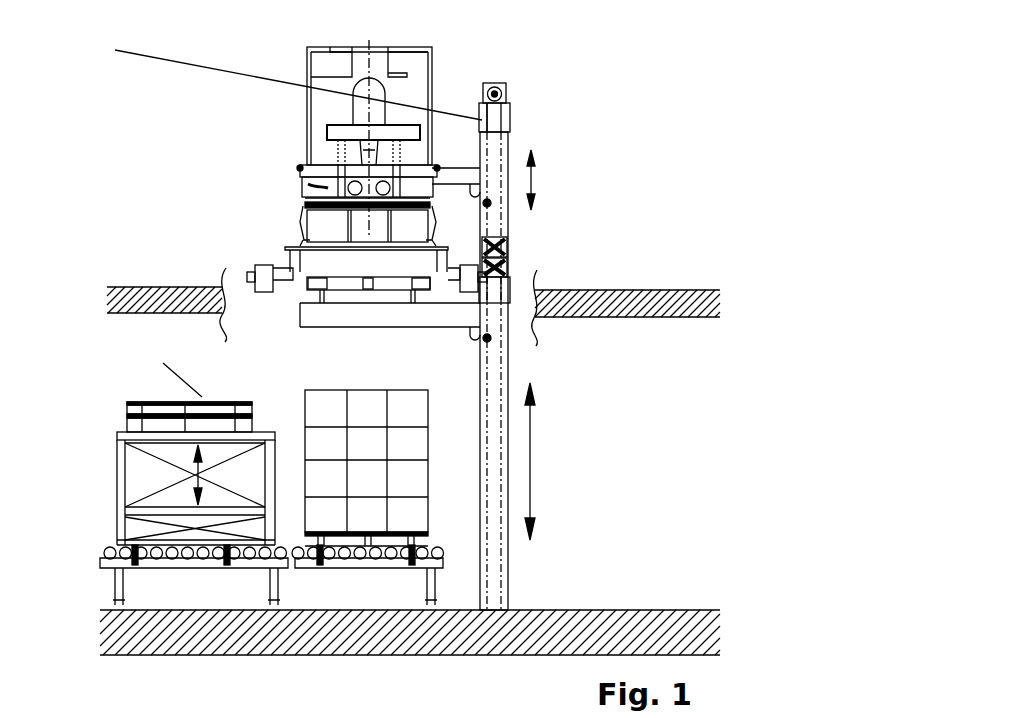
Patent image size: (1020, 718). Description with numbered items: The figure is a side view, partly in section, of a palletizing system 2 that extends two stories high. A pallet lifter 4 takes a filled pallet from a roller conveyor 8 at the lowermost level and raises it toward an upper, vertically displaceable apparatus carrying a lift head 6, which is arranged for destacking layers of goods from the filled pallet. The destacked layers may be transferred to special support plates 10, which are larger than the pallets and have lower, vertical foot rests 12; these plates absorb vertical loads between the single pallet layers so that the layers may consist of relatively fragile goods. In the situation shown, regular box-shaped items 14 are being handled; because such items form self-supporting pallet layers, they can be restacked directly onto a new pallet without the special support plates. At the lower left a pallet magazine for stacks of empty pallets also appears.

The palletizing system 2 is at (540, 233).
The pallet lifter 4 is at (320, 313).
The lift head 6 is at (320, 183).
The roller conveyor 8 is at (368, 560).
The support plate 10 is at (293, 242).
The foot rest 12 is at (407, 257).
The box-shaped item 14 is at (407, 403).